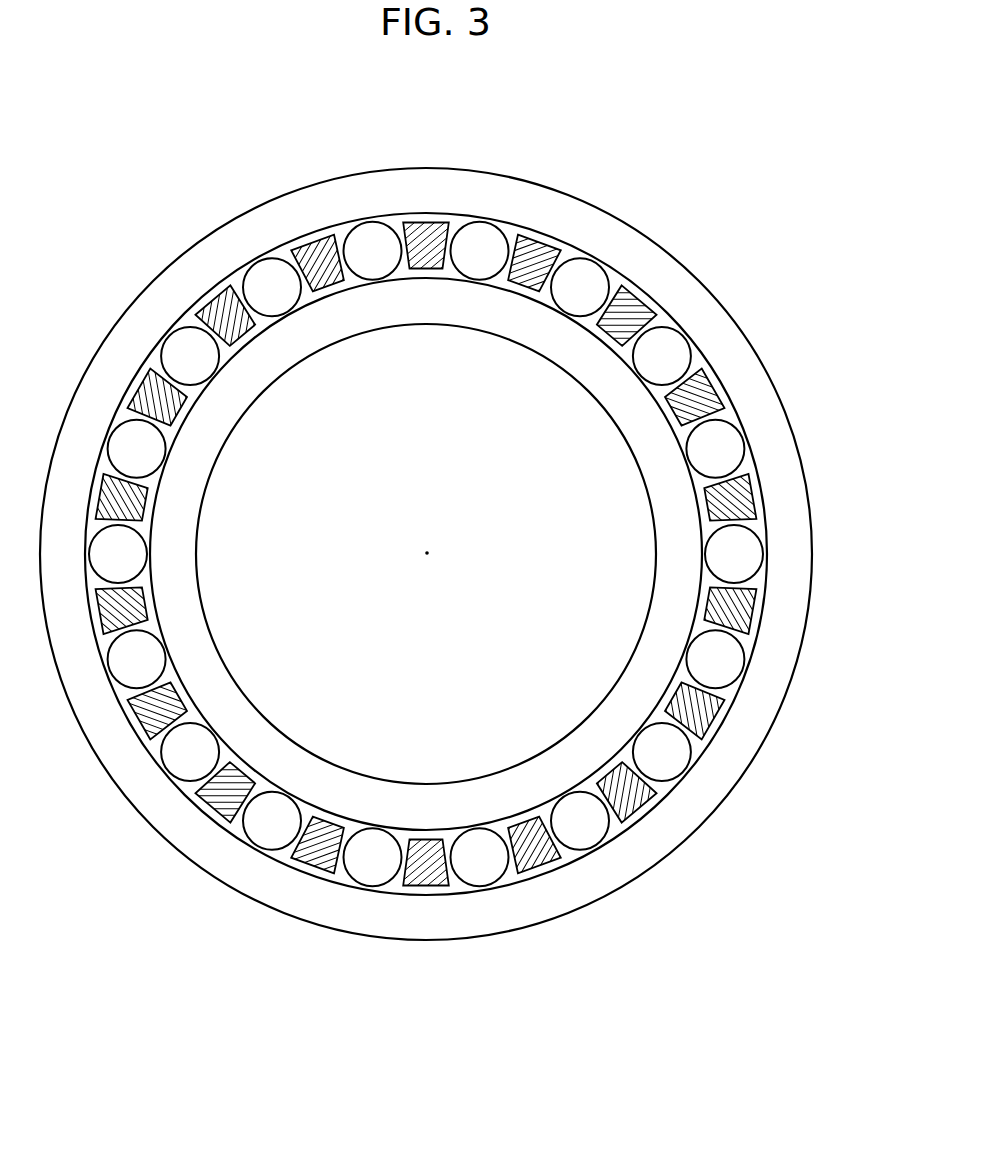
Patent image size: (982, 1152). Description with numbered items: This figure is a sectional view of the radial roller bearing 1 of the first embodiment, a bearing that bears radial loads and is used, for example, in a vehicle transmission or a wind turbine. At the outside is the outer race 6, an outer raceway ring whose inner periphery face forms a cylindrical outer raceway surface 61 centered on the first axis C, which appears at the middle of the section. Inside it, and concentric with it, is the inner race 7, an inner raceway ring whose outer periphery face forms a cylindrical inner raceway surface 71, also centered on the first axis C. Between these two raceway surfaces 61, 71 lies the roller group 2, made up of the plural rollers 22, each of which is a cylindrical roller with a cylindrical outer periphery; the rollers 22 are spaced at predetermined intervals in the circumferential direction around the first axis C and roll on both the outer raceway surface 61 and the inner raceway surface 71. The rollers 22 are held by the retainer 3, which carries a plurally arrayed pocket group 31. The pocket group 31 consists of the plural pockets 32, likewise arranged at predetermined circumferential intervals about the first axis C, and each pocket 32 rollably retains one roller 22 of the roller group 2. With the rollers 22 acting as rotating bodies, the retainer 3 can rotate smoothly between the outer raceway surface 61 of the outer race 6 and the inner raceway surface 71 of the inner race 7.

The radial roller bearing 1 is at (705, 86).
The roller group 2 is at (788, 236).
The roller 22 is at (593, 265).
The retainer 3 is at (313, 228).
The pocket group 31 is at (124, 194).
The pocket 32 is at (287, 250).
The outer race 6 is at (432, 162).
The outer raceway surface 61 is at (117, 417).
The inner race 7 is at (436, 330).
The inner raceway surface 71 is at (553, 283).
The first axis C is at (430, 553).